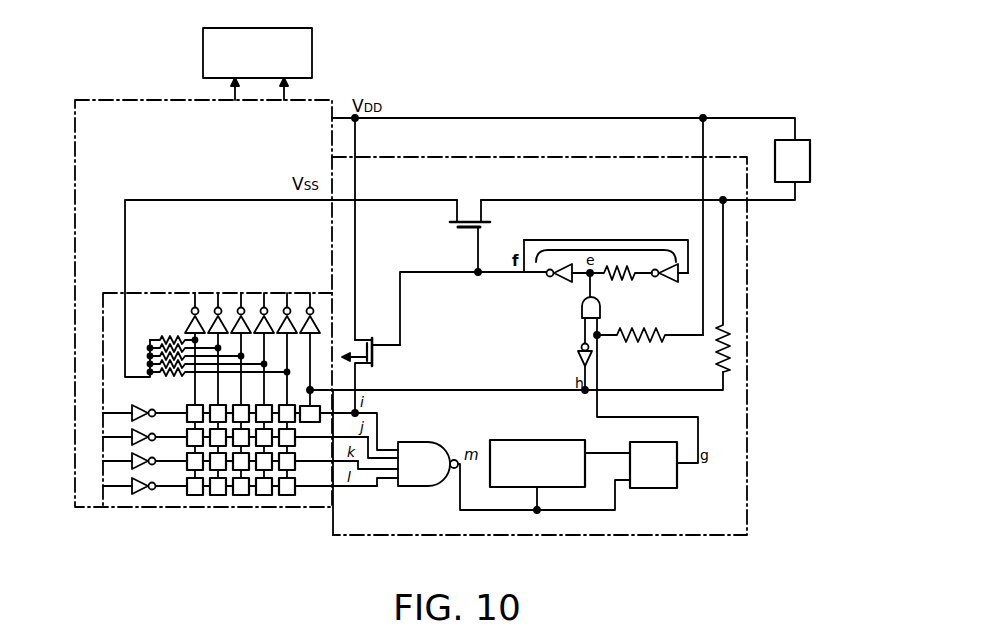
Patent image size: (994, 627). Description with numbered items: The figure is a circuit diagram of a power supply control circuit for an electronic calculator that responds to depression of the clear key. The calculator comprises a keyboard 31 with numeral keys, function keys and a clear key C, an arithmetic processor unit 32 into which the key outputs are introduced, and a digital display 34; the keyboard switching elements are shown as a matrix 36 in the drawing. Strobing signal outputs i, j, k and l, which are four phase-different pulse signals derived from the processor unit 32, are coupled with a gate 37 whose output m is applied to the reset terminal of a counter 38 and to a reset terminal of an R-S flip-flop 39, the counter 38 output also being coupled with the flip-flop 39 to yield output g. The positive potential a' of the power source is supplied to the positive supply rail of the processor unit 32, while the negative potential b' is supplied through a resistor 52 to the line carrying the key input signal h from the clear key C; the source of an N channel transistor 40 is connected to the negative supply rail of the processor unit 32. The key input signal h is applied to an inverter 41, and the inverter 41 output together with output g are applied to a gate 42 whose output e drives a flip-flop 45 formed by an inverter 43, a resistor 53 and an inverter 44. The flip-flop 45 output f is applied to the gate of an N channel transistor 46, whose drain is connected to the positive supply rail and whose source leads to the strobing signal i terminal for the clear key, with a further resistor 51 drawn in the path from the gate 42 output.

The keyboard 31 is at (150, 497).
The arithmetic processor unit 32 is at (82, 258).
The digital display 34 is at (305, 45).
The key matrix switch elements 36 is at (220, 497).
The gate 37 is at (423, 465).
The counter 38 is at (530, 462).
The R-S flip-flop 39 is at (663, 478).
The N channel transistor 40 is at (470, 214).
The inverter 41 is at (576, 362).
The gate 42 is at (582, 312).
The inverter 43 is at (793, 158).
The inverter 44 is at (662, 284).
The flip-flop 45 is at (596, 250).
The N channel transistor 46 is at (374, 360).
The resistor 51 is at (648, 390).
The resistor 52 is at (713, 286).
The resistor 53 is at (621, 287).